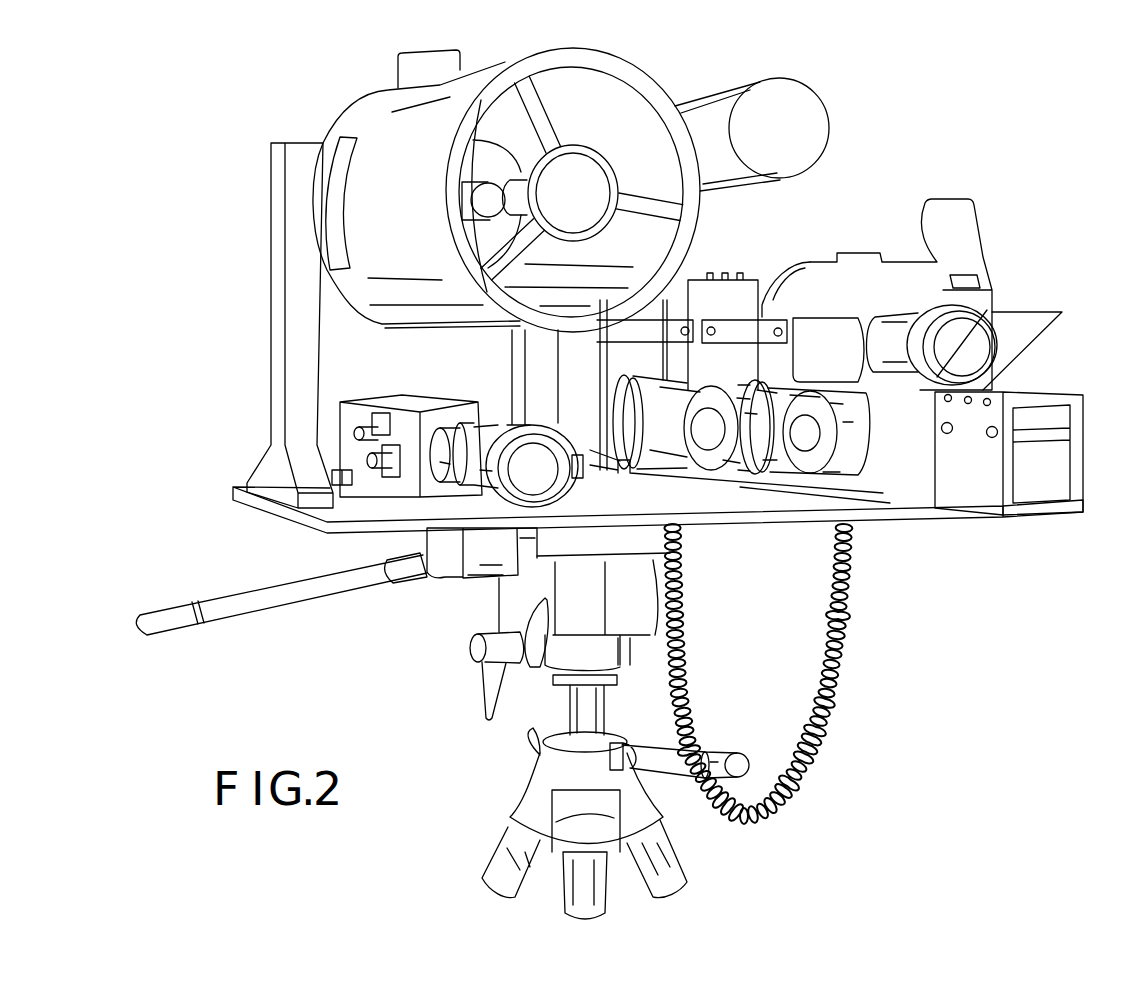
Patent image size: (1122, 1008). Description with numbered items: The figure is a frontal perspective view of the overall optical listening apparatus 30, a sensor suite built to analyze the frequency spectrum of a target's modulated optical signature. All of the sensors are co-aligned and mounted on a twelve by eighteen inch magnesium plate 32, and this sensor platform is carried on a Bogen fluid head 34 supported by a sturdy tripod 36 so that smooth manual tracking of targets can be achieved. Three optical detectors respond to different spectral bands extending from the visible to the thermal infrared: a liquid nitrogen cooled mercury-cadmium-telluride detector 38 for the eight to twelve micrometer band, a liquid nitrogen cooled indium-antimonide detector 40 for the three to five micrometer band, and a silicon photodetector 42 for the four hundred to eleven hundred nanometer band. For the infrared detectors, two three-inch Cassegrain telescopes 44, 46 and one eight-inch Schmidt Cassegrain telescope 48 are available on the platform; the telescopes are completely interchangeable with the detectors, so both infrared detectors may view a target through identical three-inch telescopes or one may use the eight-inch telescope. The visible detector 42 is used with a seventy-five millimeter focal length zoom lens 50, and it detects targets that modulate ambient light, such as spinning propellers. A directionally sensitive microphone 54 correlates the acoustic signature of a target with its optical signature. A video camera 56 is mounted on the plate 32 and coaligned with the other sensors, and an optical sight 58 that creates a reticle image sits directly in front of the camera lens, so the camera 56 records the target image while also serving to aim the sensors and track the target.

The overall apparatus 30 is at (271, 205).
The magnesium plate 32 is at (718, 520).
The fluid head 34 is at (499, 600).
The tripod 36 is at (530, 780).
The mercury-cadmium-telluride detector 38 is at (735, 278).
The indium-antimonide detector 40 is at (665, 305).
The silicon photodetector 42 is at (343, 400).
The three-inch telescope 44 is at (863, 475).
The three-inch telescope 46 is at (735, 478).
The eight-inch telescope 48 is at (338, 114).
The zoom lens 50 is at (490, 500).
The directionally sensitive microphone 54 is at (829, 104).
The video camera 56 is at (1005, 299).
The optical sight 58 is at (1037, 347).